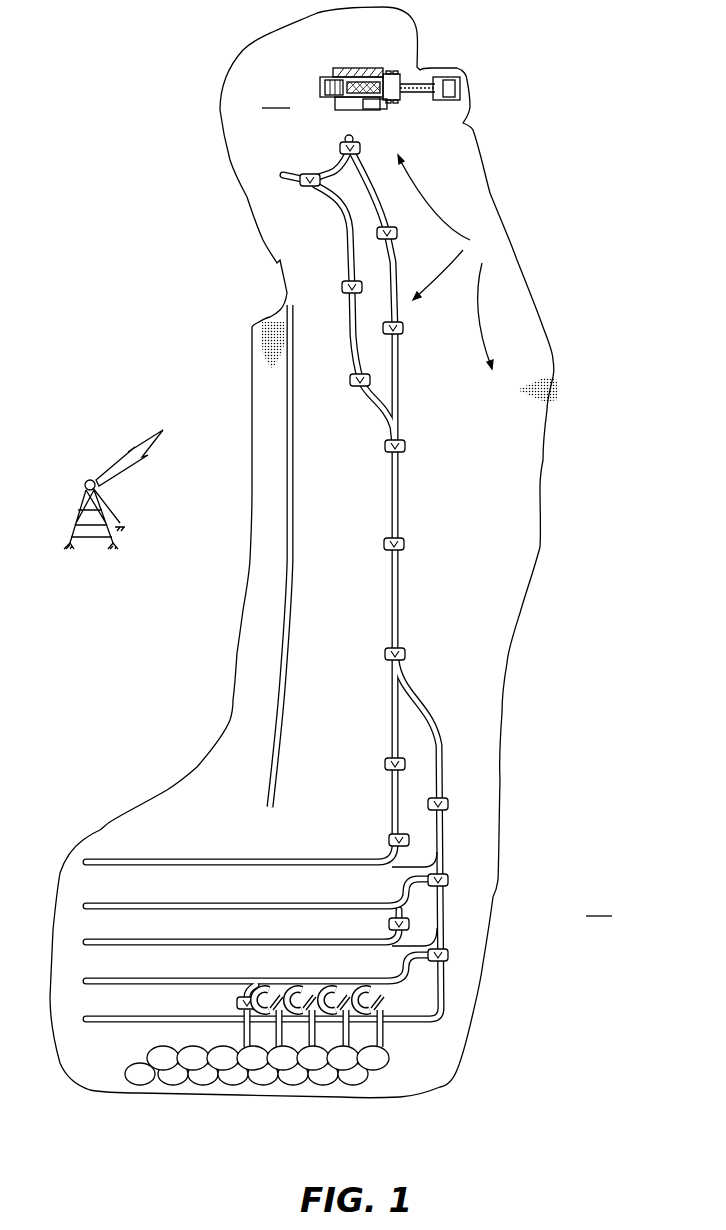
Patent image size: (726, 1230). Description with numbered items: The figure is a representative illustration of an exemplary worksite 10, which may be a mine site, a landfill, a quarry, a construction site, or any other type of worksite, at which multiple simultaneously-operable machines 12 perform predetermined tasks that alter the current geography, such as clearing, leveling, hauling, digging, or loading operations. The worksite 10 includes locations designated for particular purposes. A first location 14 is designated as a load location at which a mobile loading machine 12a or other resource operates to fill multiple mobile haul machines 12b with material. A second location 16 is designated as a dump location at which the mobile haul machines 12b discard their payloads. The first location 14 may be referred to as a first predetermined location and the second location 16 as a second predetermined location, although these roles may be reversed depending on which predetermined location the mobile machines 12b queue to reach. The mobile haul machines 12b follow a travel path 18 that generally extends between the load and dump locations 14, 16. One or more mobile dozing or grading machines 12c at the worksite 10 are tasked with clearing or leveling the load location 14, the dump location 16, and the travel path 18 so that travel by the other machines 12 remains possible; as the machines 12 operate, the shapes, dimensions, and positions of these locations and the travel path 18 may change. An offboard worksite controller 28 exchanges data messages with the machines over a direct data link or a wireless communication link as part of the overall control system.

The worksite 10 is at (331, 552).
The machines 12 is at (447, 262).
The mobile loading machine 12a is at (324, 69).
The mobile haul machines 12b is at (407, 444).
The mobile dozing or grading machines 12c is at (270, 315).
The first location 14 is at (276, 97).
The second location 16 is at (438, 1063).
The travel path 18 is at (398, 592).
The offboard worksite controller 28 is at (85, 486).